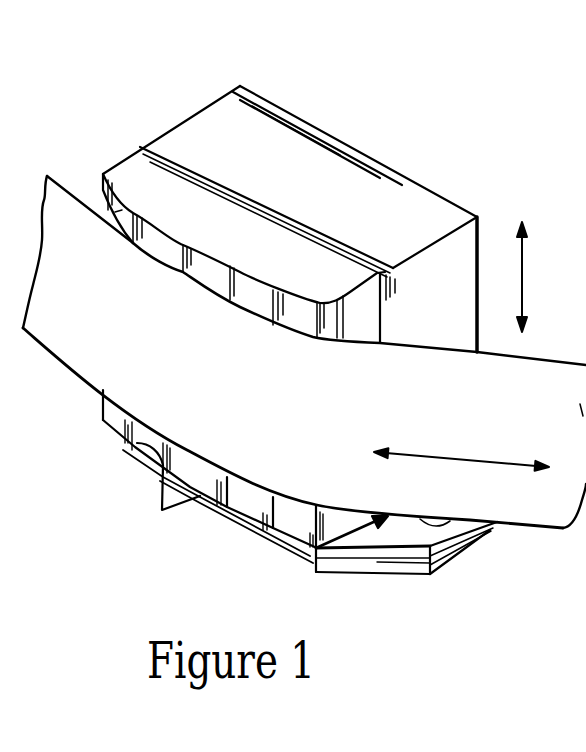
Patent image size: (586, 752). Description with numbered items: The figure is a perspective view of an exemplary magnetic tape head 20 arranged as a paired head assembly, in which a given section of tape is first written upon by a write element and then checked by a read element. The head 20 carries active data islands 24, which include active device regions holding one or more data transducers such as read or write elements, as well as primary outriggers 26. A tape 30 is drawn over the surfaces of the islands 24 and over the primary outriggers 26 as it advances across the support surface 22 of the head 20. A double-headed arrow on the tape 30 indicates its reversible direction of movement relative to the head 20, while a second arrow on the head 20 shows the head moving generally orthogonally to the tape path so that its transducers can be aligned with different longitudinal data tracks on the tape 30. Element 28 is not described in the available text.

The magnetic tape head 20 is at (327, 130).
The support surface 22 is at (120, 213).
The active data islands 24 is at (222, 283).
The primary outriggers 26 is at (162, 512).
The sliding tray 28 is at (527, 527).
The tape 30 is at (461, 476).